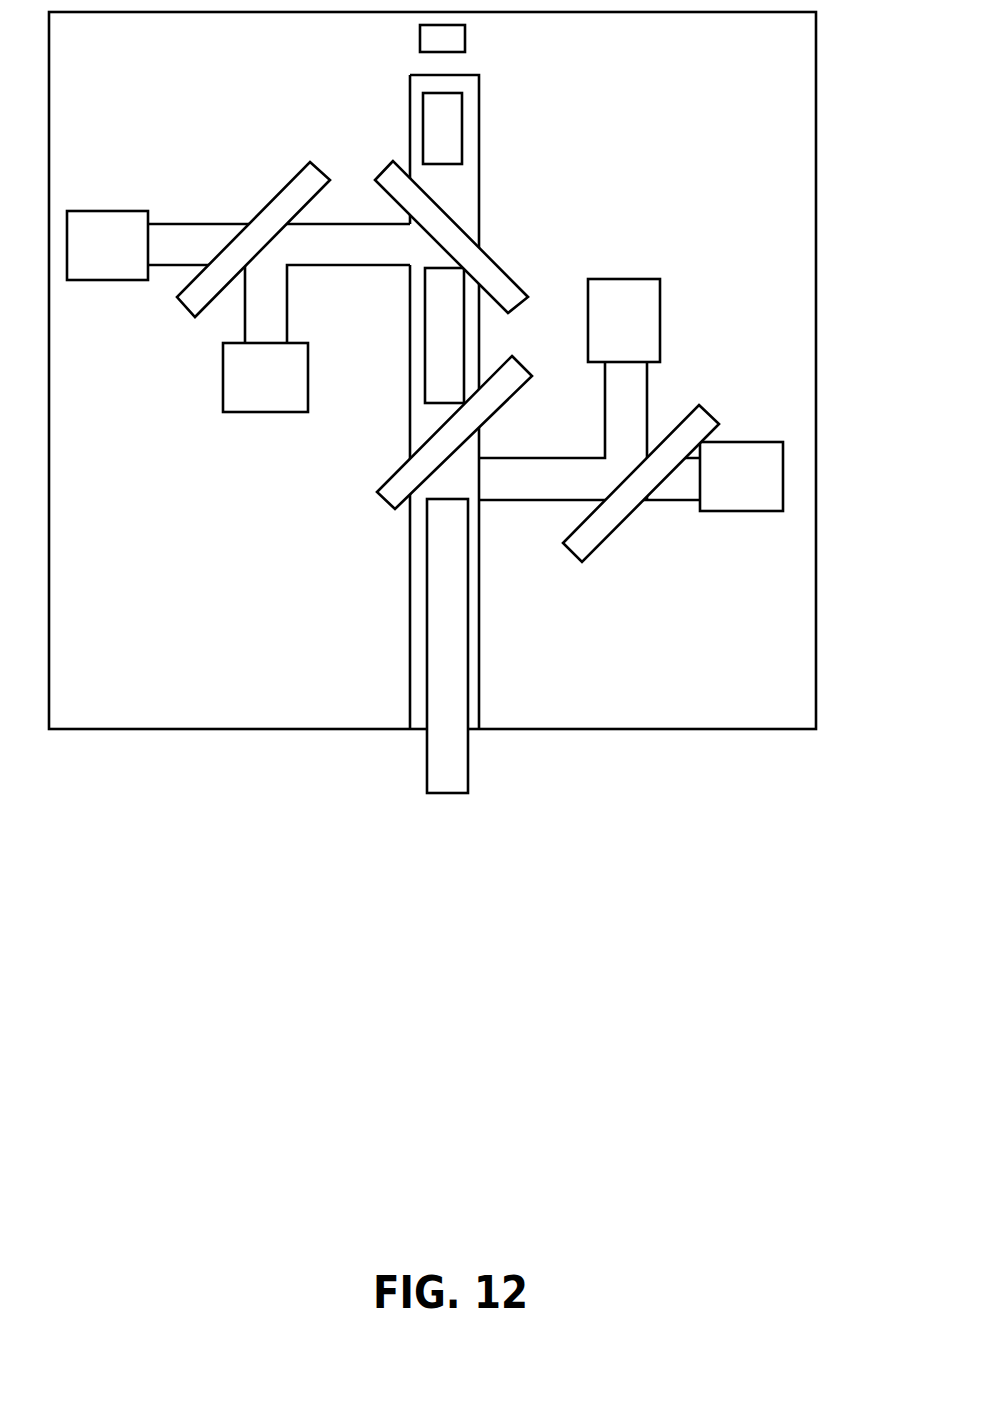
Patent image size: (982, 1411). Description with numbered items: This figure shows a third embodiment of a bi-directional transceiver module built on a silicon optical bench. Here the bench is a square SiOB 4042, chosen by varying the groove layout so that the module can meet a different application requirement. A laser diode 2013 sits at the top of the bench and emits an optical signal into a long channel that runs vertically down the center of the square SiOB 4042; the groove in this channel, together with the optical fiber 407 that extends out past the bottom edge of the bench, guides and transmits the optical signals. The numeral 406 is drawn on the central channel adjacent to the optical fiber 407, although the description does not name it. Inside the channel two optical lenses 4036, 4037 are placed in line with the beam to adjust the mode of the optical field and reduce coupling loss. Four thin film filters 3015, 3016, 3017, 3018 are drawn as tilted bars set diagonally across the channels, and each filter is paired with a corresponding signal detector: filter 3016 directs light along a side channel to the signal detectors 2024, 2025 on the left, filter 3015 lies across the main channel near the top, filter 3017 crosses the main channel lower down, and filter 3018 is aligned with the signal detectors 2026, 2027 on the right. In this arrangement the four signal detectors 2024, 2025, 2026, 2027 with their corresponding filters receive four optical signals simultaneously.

The laser diode 2013 is at (450, 39).
The optical lens 4036 is at (455, 132).
The optical lens 4037 is at (430, 332).
The thin film filter 3015 is at (493, 272).
The thin film filter 3016 is at (280, 202).
The thin film filter 3017 is at (392, 490).
The thin film filter 3018 is at (598, 532).
The signal detector 2024 is at (98, 252).
The signal detector 2025 is at (272, 402).
The signal detector 2026 is at (635, 320).
The signal detector 2027 is at (745, 498).
The waveguide channel 406 is at (477, 715).
The optical fiber 407 is at (458, 662).
The square SiOB 4042 is at (733, 697).